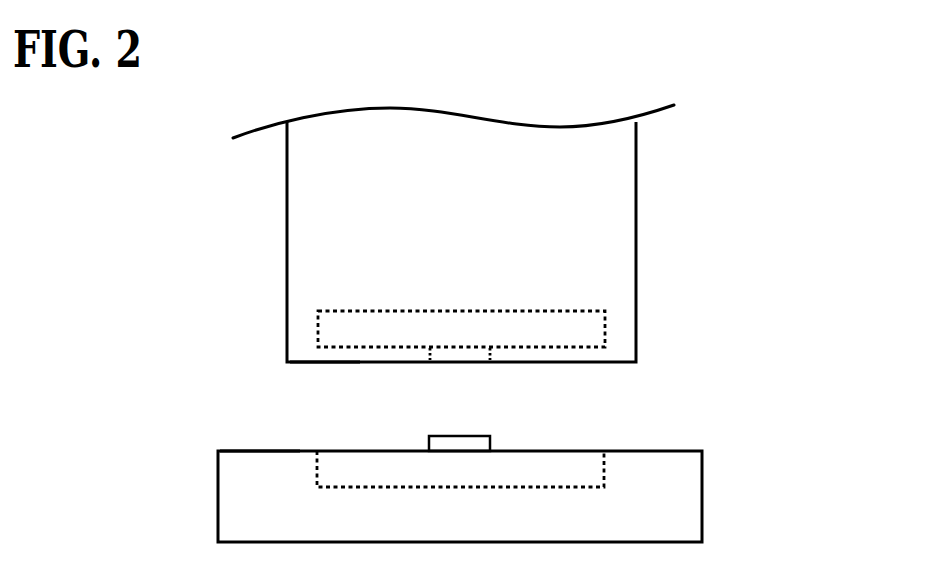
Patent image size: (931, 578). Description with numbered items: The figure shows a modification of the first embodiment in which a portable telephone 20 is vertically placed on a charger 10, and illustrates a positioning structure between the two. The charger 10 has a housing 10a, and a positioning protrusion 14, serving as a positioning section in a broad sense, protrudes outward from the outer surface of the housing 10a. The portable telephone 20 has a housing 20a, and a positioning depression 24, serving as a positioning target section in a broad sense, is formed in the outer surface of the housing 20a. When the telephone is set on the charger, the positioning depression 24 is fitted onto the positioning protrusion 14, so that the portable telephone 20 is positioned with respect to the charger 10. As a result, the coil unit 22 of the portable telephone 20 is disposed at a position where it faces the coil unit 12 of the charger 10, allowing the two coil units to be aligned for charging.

The charger 10 is at (702, 497).
The housing of the charger 10a is at (258, 451).
The coil unit of the charger 12 is at (608, 470).
The positioning protrusion 14 is at (467, 445).
The portable telephone 20 is at (636, 180).
The housing of the portable telephone 20a is at (330, 362).
The coil unit of the portable telephone 22 is at (608, 324).
The positioning depression 24 is at (455, 363).